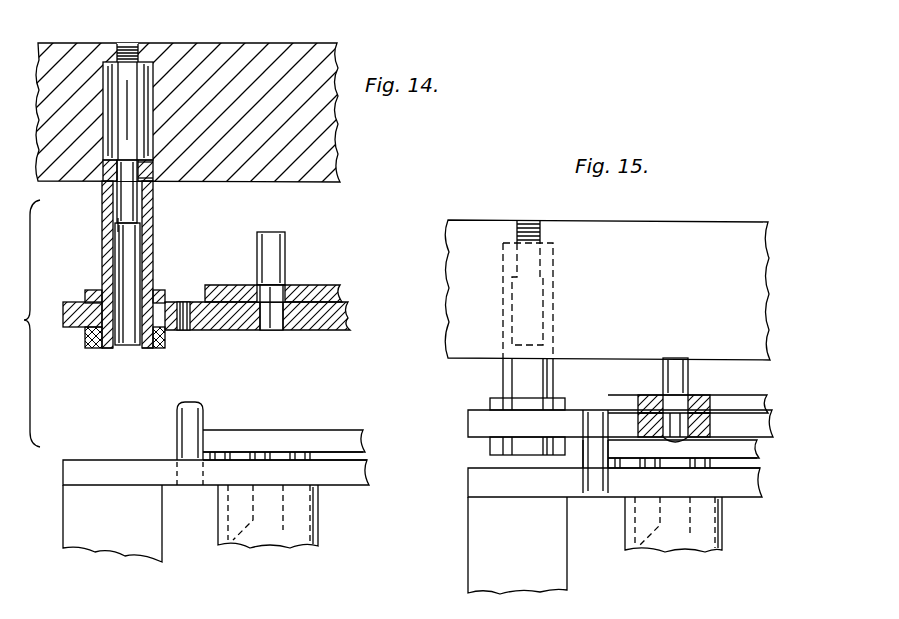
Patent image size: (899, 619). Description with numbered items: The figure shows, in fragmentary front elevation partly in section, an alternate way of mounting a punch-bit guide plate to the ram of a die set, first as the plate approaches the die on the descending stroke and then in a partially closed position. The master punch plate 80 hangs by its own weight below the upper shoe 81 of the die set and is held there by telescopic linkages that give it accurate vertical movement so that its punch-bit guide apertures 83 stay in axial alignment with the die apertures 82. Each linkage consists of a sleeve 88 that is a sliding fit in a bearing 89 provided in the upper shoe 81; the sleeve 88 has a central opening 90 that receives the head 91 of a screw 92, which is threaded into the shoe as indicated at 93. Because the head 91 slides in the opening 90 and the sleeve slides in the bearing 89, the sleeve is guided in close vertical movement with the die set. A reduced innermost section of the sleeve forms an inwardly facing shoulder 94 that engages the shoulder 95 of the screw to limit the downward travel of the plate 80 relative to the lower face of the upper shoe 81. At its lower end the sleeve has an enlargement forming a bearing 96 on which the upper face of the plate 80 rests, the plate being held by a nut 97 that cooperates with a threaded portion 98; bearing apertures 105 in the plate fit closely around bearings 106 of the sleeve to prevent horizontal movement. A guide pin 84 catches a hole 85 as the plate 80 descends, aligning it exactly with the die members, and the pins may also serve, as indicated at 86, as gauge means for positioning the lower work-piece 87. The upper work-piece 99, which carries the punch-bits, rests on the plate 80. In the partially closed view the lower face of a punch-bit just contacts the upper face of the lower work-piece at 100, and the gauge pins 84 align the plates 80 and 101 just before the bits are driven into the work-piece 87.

In FIG. 14, the master punch plate 80 is at (350, 316).
In FIG. 15, the master punch plate 80 is at (468, 420).
In FIG. 14, the upper shoe 81 is at (340, 155).
In FIG. 14, the die apertures 82 is at (280, 470).
In FIG. 14, the punch-bit guide apertures 83 is at (272, 332).
In FIG. 15, the punch-bit guide apertures 83 is at (675, 397).
In FIG. 14, the guide pin 84 is at (185, 428).
In FIG. 15, the guide pin 84 is at (585, 445).
In FIG. 14, the hole 85 is at (190, 333).
In FIG. 15, the hole 85 is at (605, 414).
In FIG. 14, the gauge means 86 is at (205, 445).
In FIG. 14, the work-piece 87 is at (355, 440).
In FIG. 15, the work-piece 87 is at (758, 448).
In FIG. 14, the sleeve 88 is at (155, 230).
In FIG. 14, the bearing 89 is at (100, 197).
In FIG. 14, the central opening 90 is at (153, 270).
In FIG. 14, the head 91 is at (115, 232).
In FIG. 14, the screw 92 is at (130, 108).
In FIG. 14, the threaded connection 93 is at (118, 50).
In FIG. 14, the inwardly facing shoulder 94 is at (150, 181).
In FIG. 14, the shoulder 95 is at (150, 182).
In FIG. 14, the bearing 96 is at (85, 296).
In FIG. 14, the nut 97 is at (90, 345).
In FIG. 14, the threaded portion 98 is at (105, 348).
In FIG. 14, the upper work-piece 99 is at (330, 288).
In FIG. 15, the upper work-piece 99 is at (732, 400).
In FIG. 15, the contact point 100 is at (705, 432).
In FIG. 14, the plate 101 is at (372, 470).
In FIG. 15, the plate 101 is at (615, 482).
In FIG. 14, the bearing apertures 105 is at (142, 348).
In FIG. 14, the bearings 106 is at (90, 328).